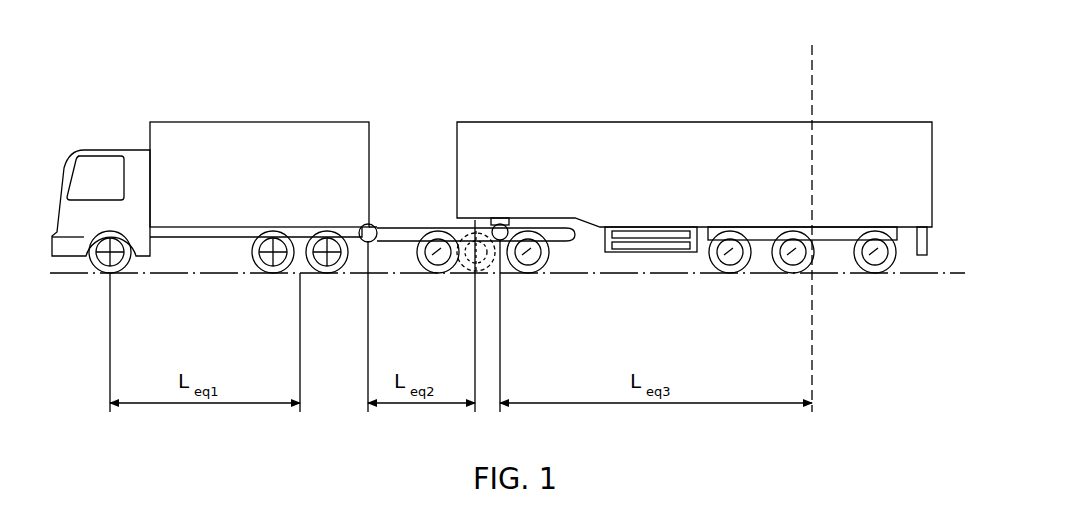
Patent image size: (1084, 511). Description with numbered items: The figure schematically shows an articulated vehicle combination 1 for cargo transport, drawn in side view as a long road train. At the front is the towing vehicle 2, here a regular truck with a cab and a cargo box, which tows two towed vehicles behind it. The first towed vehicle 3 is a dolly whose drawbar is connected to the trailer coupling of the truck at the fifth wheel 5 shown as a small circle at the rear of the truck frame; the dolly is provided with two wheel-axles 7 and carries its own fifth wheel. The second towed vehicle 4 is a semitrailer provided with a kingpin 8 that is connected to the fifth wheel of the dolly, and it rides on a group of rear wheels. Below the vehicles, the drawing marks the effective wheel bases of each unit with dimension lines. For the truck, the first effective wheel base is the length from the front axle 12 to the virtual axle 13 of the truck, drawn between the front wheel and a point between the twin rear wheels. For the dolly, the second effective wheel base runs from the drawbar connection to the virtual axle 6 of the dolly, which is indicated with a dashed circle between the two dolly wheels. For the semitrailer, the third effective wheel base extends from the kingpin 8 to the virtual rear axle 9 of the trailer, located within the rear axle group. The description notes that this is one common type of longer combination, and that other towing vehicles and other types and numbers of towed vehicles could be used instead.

The articulated vehicle combination 1 is at (216, 47).
The towing vehicle 2 is at (253, 138).
The first towed vehicle 3 is at (432, 228).
The second towed vehicle 4 is at (703, 162).
The fifth wheel coupling 5 is at (374, 227).
The virtual axle of the dolly 6 is at (463, 264).
The wheel-axles 7 is at (432, 276).
The kingpin 8 is at (506, 229).
The virtual rear axle 9 is at (840, 262).
The front axle 12 is at (100, 276).
The virtual axle of the truck 13 is at (282, 276).